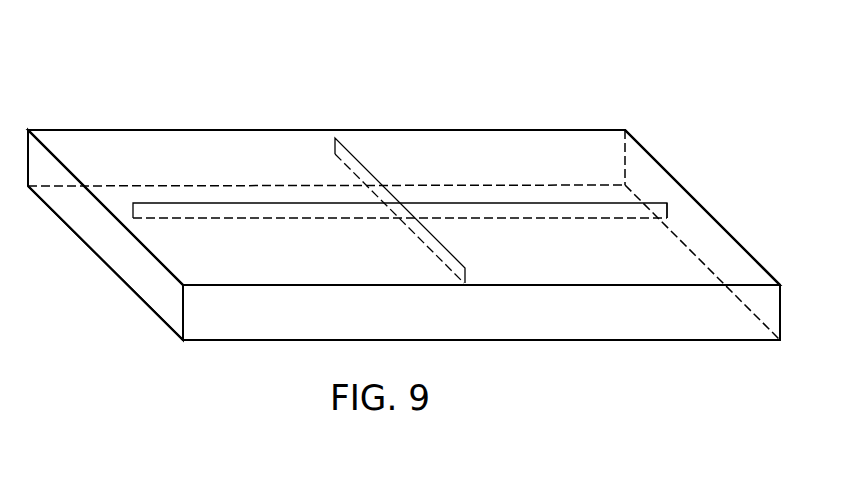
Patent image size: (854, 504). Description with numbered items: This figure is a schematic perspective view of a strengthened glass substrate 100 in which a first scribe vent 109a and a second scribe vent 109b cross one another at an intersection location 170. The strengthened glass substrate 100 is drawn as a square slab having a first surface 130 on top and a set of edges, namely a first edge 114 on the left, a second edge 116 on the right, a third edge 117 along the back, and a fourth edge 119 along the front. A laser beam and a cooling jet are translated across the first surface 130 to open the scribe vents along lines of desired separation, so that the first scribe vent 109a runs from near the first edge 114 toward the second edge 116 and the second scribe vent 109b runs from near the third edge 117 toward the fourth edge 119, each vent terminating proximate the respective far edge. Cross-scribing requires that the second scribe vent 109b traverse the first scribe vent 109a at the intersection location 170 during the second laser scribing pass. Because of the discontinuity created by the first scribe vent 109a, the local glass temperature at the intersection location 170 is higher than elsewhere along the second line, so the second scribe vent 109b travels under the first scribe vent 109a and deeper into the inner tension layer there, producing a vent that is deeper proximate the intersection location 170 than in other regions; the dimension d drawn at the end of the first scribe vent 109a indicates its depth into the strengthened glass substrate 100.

The strengthened glass substrate 100 is at (404, 173).
The third edge 117 is at (518, 130).
The first edge 114 is at (147, 283).
The second edge 116 is at (737, 242).
The fourth edge 119 is at (673, 318).
The first surface 130 is at (628, 267).
The first scribe vent 109a is at (255, 203).
The second scribe vent 109b is at (366, 163).
The intersection location 170 is at (446, 176).
The depth d is at (672, 220).